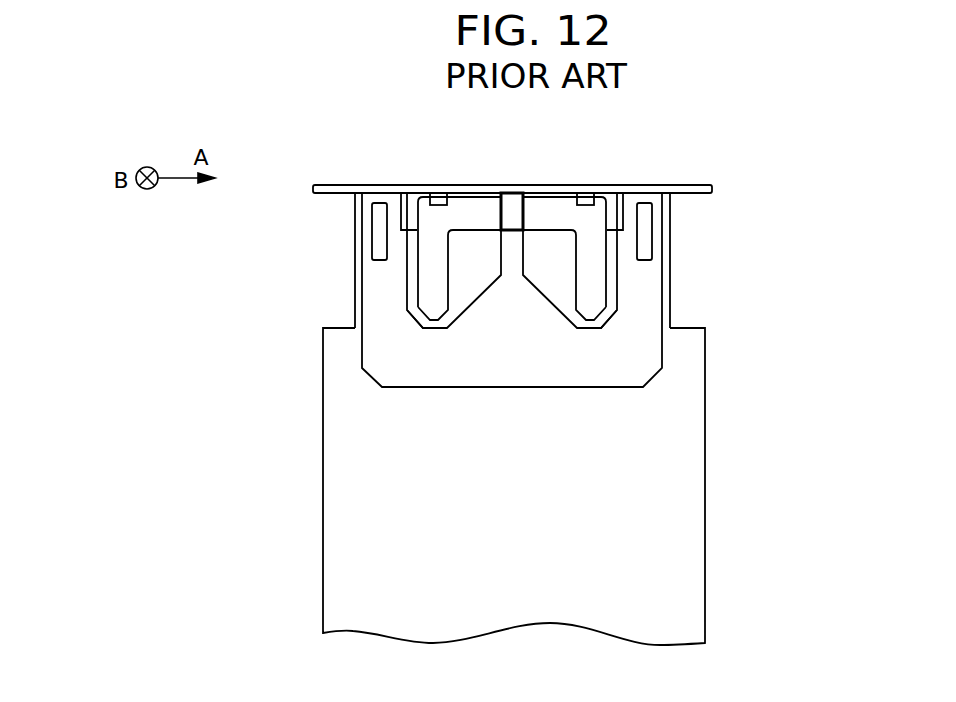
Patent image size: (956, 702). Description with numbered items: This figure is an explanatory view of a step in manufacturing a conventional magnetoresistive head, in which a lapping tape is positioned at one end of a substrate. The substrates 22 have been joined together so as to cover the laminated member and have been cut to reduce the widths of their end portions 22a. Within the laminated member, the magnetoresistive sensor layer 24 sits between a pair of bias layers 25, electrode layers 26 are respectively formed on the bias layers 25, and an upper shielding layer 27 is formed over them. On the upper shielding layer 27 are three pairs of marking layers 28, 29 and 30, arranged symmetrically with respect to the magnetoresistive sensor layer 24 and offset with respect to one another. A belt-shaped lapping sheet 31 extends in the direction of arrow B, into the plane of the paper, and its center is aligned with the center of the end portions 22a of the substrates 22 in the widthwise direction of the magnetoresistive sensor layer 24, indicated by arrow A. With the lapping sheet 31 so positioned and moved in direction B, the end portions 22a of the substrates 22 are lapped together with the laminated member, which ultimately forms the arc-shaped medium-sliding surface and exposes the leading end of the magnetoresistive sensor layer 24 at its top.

The substrate 22 is at (678, 487).
The end portion 22a is at (667, 297).
The magnetoresistive sensor layer 24 is at (510, 212).
The bias layer 25 is at (420, 323).
The electrode layer 26 is at (423, 277).
The upper shielding layer 27 is at (477, 370).
The marking layer 28 is at (436, 193).
The marking layer 29 is at (397, 210).
The marking layer 30 is at (380, 221).
The lapping sheet 31 is at (690, 188).